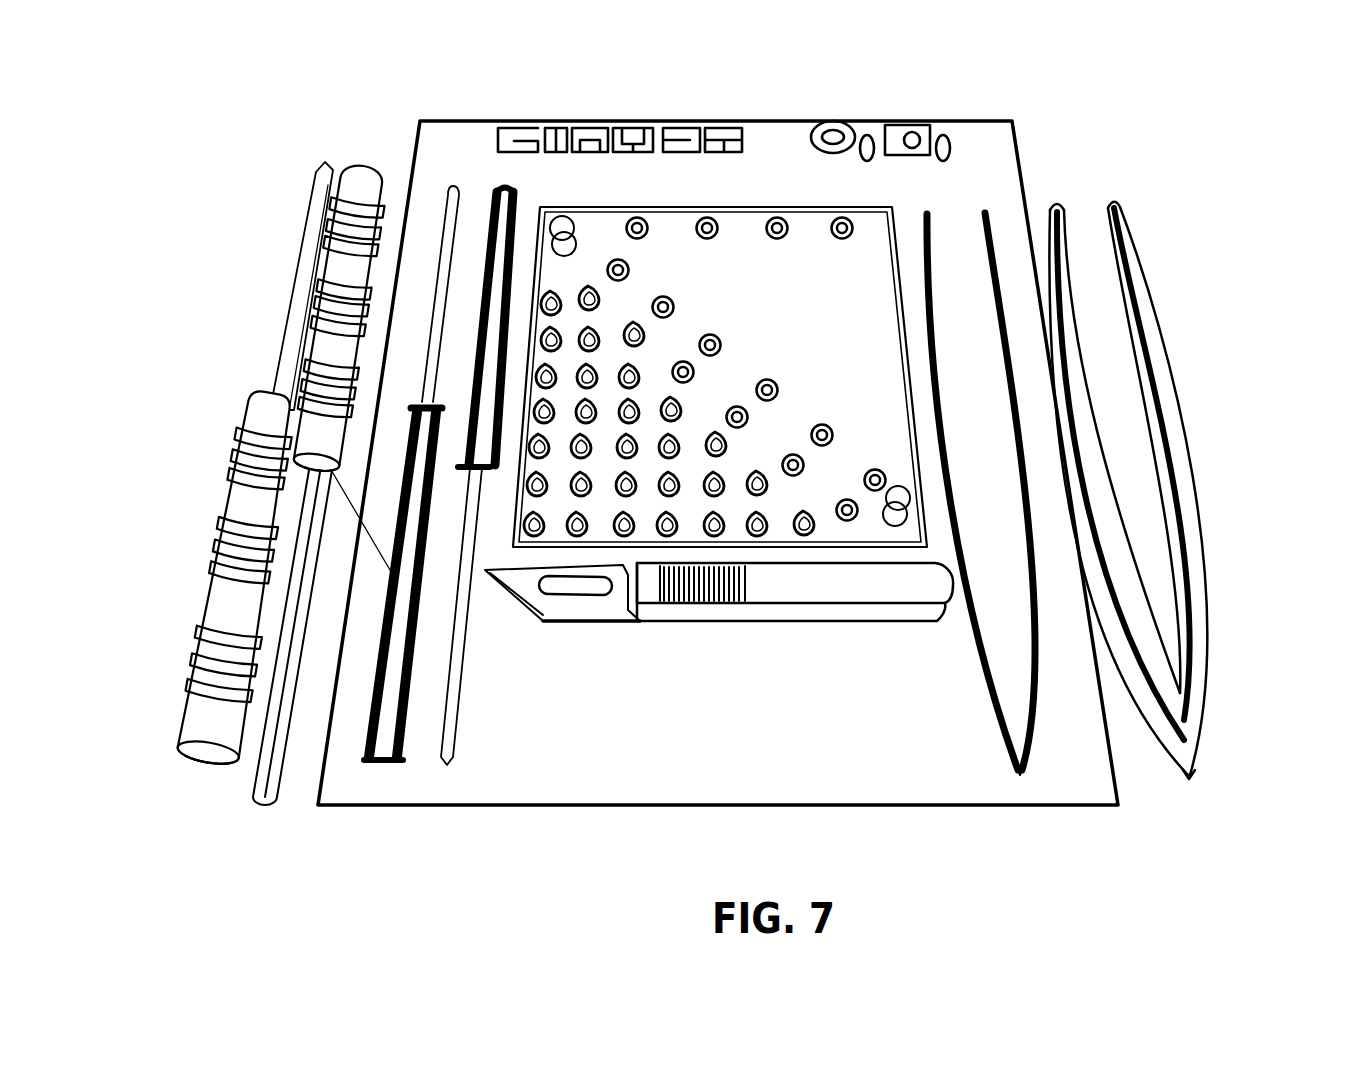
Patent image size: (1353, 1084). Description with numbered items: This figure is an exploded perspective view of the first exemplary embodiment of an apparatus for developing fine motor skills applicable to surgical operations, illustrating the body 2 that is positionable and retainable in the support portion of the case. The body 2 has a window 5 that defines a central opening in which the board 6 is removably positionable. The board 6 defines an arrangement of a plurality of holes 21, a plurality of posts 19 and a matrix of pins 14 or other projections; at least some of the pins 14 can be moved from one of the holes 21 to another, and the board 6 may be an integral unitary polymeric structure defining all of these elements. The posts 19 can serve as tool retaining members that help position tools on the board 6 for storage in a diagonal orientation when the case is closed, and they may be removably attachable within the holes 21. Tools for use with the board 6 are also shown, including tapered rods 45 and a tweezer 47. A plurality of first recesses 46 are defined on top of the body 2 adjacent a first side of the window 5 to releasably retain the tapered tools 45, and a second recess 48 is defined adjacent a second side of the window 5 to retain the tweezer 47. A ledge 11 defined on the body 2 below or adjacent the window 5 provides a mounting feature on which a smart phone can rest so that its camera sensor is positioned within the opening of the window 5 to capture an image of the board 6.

The body 2 is at (462, 142).
The window 5 is at (541, 245).
The board 6 is at (858, 267).
The ledge 11 is at (775, 590).
The pins 14 is at (677, 407).
The posts 19 is at (913, 500).
The holes 21 is at (880, 475).
The tapered rods 45 is at (268, 405).
The first recesses 46 is at (302, 423).
The tweezer 47 is at (1193, 713).
The second recess 48 is at (1040, 675).